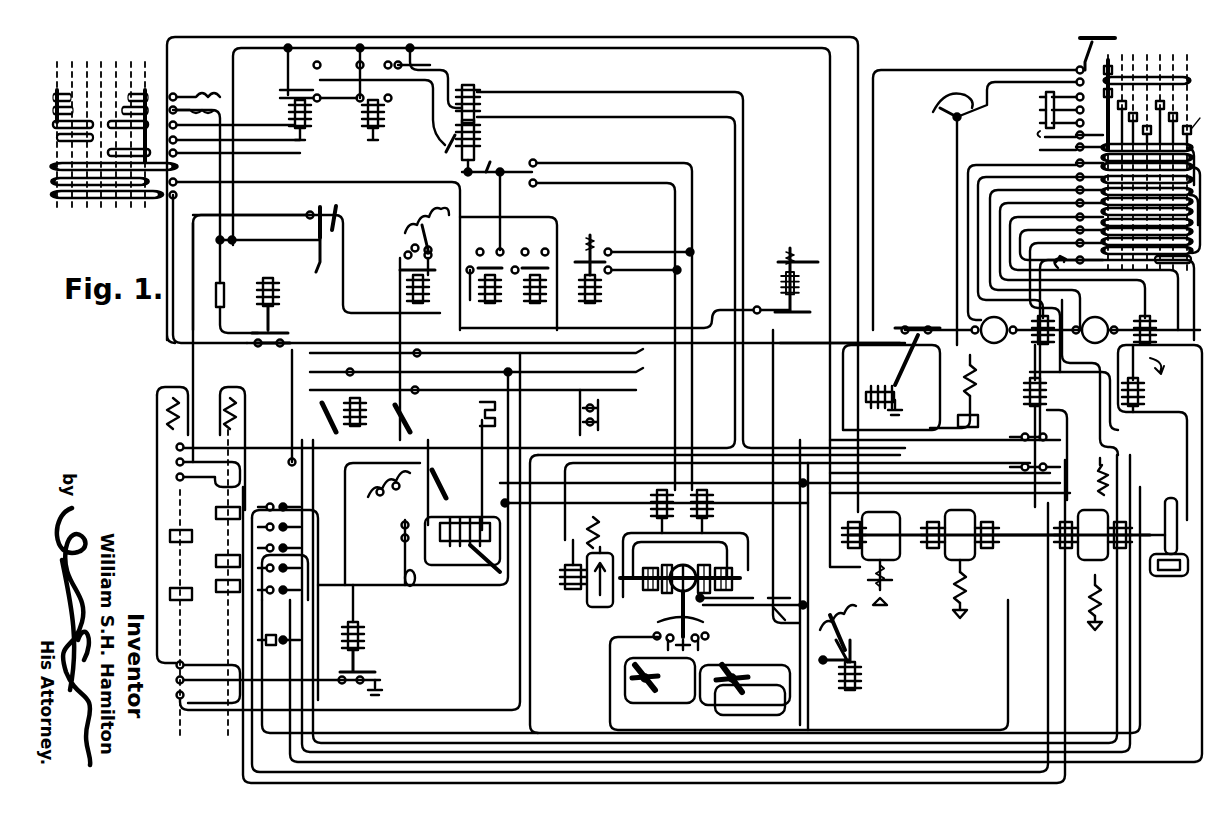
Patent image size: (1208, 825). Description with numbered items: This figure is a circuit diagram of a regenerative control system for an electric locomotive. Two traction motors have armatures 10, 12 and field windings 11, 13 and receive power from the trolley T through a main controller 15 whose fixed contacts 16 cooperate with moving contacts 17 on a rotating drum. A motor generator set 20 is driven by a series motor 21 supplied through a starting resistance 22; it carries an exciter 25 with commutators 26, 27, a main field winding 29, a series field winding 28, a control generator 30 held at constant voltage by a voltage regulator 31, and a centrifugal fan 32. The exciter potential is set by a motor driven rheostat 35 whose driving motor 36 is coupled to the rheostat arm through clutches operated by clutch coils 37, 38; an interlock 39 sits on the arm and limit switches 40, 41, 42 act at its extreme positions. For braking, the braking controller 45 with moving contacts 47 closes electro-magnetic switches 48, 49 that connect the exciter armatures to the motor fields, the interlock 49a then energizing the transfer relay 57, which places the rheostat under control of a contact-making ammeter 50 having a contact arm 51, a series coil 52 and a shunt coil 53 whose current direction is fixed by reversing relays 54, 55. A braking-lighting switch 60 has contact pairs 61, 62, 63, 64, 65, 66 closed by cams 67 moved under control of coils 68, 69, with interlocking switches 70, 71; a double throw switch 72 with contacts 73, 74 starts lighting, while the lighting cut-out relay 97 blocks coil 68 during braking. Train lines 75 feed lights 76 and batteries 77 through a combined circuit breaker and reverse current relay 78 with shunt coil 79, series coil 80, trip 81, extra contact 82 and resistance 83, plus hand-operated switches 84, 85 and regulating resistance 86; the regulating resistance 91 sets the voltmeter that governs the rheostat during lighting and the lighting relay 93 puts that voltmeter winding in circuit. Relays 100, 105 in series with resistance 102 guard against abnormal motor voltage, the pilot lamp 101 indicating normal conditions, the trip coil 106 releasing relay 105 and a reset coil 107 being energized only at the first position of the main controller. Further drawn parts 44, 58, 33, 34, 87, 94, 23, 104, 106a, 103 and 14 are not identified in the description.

The braking controller 45 is at (114, 140).
The moving contacts 47 is at (57, 140).
The terminal block 44 is at (178, 155).
The connecting leads 58 is at (215, 95).
The reversing relay 55 is at (289, 126).
The reversing relay 54 is at (362, 128).
The series coil 52 is at (480, 100).
The contact-making ammeter 50 is at (494, 148).
The shunt coil 53 is at (442, 148).
The contact arm 51 is at (489, 157).
The contact 73 is at (307, 211).
The contact 74 is at (343, 210).
The double throw switch 72 is at (313, 264).
The motor driven rheostat 35 is at (217, 290).
The driving motor 36 is at (282, 290).
The regulating resistance 91 is at (410, 230).
The relay 33 is at (406, 296).
The transfer relay 57 is at (496, 285).
The centrifugal fan 32 is at (546, 292).
The relay 34 is at (601, 292).
The train lines 75 is at (640, 392).
The lights 76 is at (604, 407).
The coil 68 is at (178, 390).
The coil 69 is at (230, 398).
The interlocking switch 70 is at (176, 463).
The cams 67 is at (203, 563).
The contacts 61 is at (283, 503).
The contacts 62 is at (282, 522).
The contacts 63 is at (282, 545).
The contacts 64 is at (281, 566).
The contacts 65 is at (282, 590).
The contacts 66 is at (279, 648).
The interlocking switch 71 is at (175, 680).
The braking-lighting switch 60 is at (198, 728).
The lighting cut-out relay 97 is at (370, 632).
The switch blade 87 is at (314, 421).
The batteries 77 is at (352, 426).
The hand-operated switch 85 is at (391, 422).
The resistance 83 is at (497, 408).
The regulating resistance 86 is at (380, 490).
The hand-operated switch 84 is at (447, 484).
The series coil 80 is at (452, 517).
The shunt coil 79 is at (470, 517).
The extra contact 82 is at (401, 527).
The combined circuit breaker and reverse current relay 78 is at (413, 570).
The trip 81 is at (485, 564).
The clutch coil 37 is at (651, 503).
The clutch coil 38 is at (713, 500).
The interlock 39 is at (684, 591).
The relay 94 is at (586, 572).
The lighting relay 93 is at (779, 598).
The limit switch 40 is at (658, 680).
The limit switch 41 is at (742, 660).
The limit switch 42 is at (750, 676).
The voltage regulator 31 is at (854, 647).
The control generator 30 is at (871, 558).
The motor 21 is at (960, 564).
The motor generator set 20 is at (1031, 523).
The exciter 25 is at (1093, 535).
The commutator 26 is at (1052, 545).
The commutator 27 is at (1125, 528).
The indicator base 23 is at (1165, 597).
The series field winding 28 is at (1095, 616).
The main field winding 29 is at (1096, 467).
The electro-magnetic switch 48 is at (1043, 386).
The electro-magnetic switch 49 is at (1145, 388).
The interlock 49a is at (1171, 366).
The contact block 104 is at (1018, 467).
The armature 10 is at (994, 330).
The field winding 11 is at (1043, 316).
The armature 12 is at (1095, 330).
The field winding 13 is at (1146, 316).
The trip coil 106 is at (912, 322).
The relay contact 106a is at (951, 312).
The relay 100 is at (882, 390).
The reset coil 107 is at (888, 410).
The resistance 102 is at (959, 391).
The relay 105 is at (980, 424).
The relay 103 is at (796, 273).
The pilot lamp 101 is at (755, 305).
The starting resistance 22 is at (935, 106).
The fixed contacts 16 is at (1038, 118).
The contact 14 is at (1052, 148).
The trolley T is at (1080, 42).
The main controller 15 is at (1151, 152).
The moving contacts 17 is at (1198, 121).